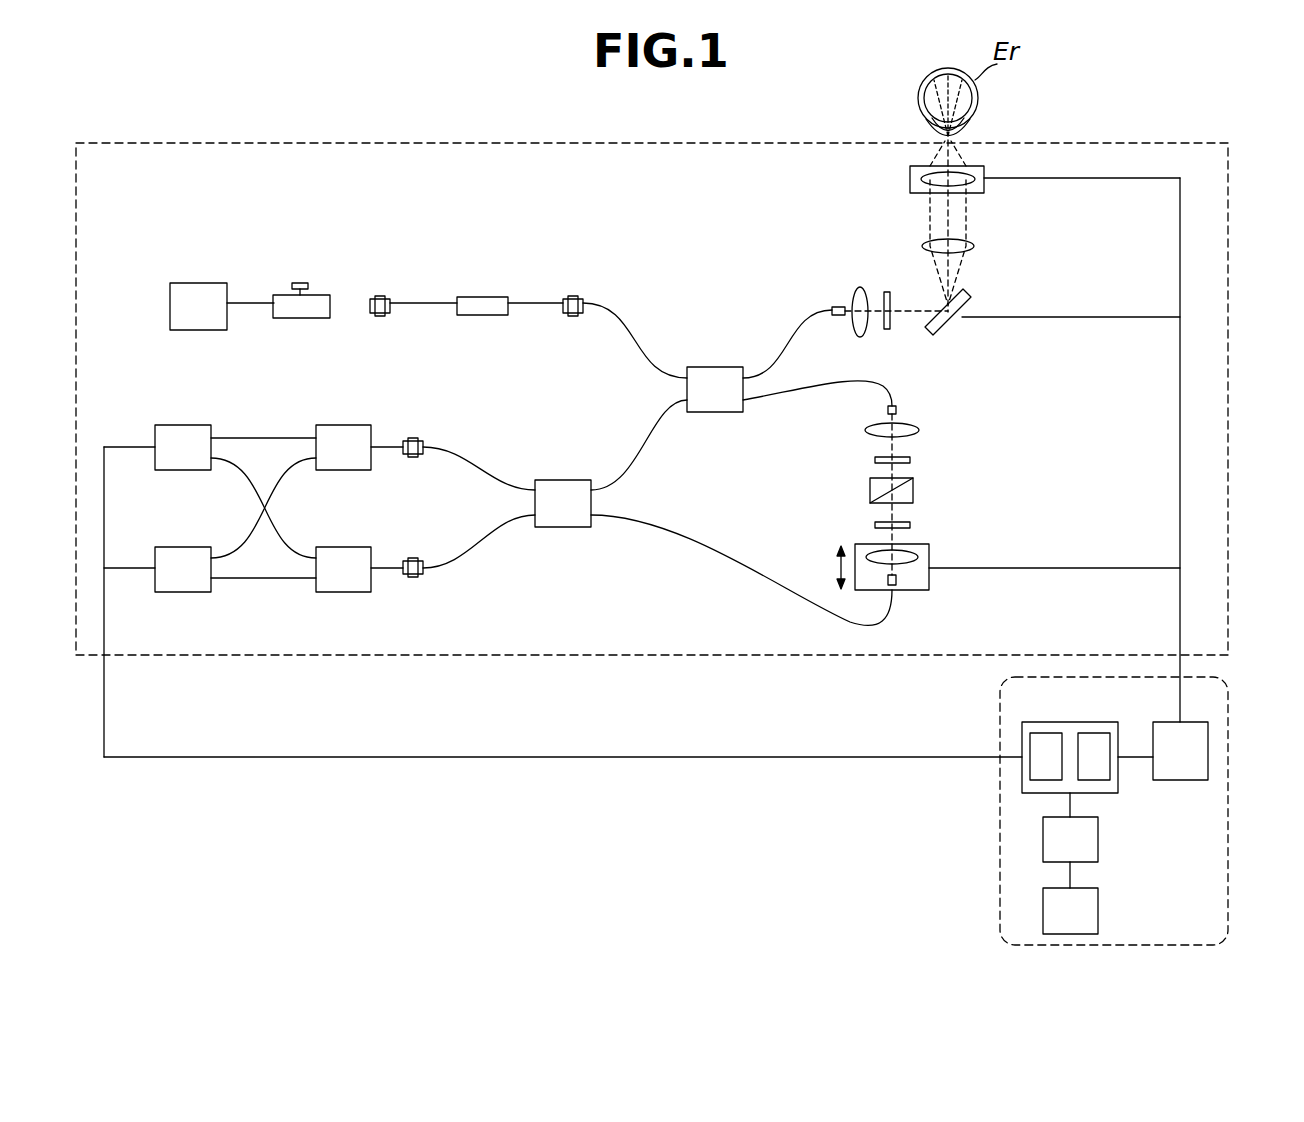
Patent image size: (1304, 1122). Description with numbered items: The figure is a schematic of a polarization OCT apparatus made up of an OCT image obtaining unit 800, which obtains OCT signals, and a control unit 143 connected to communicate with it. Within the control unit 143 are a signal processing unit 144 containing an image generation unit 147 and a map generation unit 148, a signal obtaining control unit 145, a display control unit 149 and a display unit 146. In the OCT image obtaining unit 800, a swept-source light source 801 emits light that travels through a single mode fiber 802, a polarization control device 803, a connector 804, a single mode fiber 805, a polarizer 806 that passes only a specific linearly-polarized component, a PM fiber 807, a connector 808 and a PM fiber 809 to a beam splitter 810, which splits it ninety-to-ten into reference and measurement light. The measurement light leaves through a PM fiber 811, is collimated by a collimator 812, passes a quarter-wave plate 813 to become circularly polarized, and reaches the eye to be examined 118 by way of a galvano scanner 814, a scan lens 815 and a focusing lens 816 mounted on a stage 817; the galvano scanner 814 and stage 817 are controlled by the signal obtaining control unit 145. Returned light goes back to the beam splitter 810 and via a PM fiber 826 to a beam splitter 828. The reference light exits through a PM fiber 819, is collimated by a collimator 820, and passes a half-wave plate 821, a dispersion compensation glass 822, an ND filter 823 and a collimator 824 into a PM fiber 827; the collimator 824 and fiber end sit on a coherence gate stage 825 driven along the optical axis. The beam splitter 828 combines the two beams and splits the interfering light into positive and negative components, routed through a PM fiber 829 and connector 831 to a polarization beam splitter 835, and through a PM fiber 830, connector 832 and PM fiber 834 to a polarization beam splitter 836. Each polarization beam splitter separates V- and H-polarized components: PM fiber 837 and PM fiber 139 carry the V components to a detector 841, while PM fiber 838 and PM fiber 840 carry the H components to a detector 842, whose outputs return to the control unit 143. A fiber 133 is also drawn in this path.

The OCT image obtaining unit 800 is at (372, 104).
The light source 801 is at (200, 283).
The single mode fiber 802 is at (252, 303).
The polarization control device 803 is at (320, 295).
The connector 804 is at (385, 297).
The single mode fiber 805 is at (423, 304).
The polarizer 806 is at (485, 297).
The polarization maintaining fiber 807 is at (535, 304).
The connector 808 is at (580, 297).
The polarization maintaining fiber 809 is at (635, 318).
The beam splitter 810 is at (715, 367).
The polarization maintaining fiber 811 is at (795, 322).
The collimator 812 is at (860, 287).
The quarter-wave plate 813 is at (887, 292).
The galvano scanner 814 is at (972, 293).
The scan lens 815 is at (975, 246).
The focusing lens 816 is at (921, 180).
The stage 817 is at (984, 166).
The eye to be examined 118 is at (980, 94).
The polarization maintaining fiber 819 is at (795, 395).
The collimator 820 is at (919, 430).
The half-wave plate 821 is at (910, 460).
The dispersion compensation glass 822 is at (913, 490).
The ND filter 823 is at (910, 525).
The collimator 824 is at (919, 557).
The coherence gate stage 825 is at (929, 580).
The polarization maintaining fiber 826 is at (651, 448).
The polarization maintaining fiber 827 is at (700, 560).
The beam splitter 828 is at (563, 480).
The polarization maintaining fiber 829 is at (473, 468).
The polarization maintaining fiber 830 is at (475, 543).
The connector 831 is at (418, 439).
The connector 832 is at (417, 578).
The optical fiber 133 is at (390, 450).
The polarization maintaining fiber 834 is at (390, 566).
The polarization beam splitter 835 is at (343, 425).
The polarization beam splitter 836 is at (343, 593).
The polarization maintaining fiber 837 is at (263, 438).
The polarization maintaining fiber 838 is at (275, 473).
The polarization maintaining fiber 139 is at (240, 473).
The polarization maintaining fiber 840 is at (263, 579).
The detector 841 is at (182, 425).
The detector 842 is at (183, 593).
The control unit 143 is at (1000, 840).
The signal processing unit 144 is at (1022, 740).
The signal obtaining control unit 145 is at (1180, 780).
The display unit 146 is at (1098, 910).
The image generation unit 147 is at (1044, 733).
The map generation unit 148 is at (1097, 733).
The display control unit 149 is at (1098, 843).